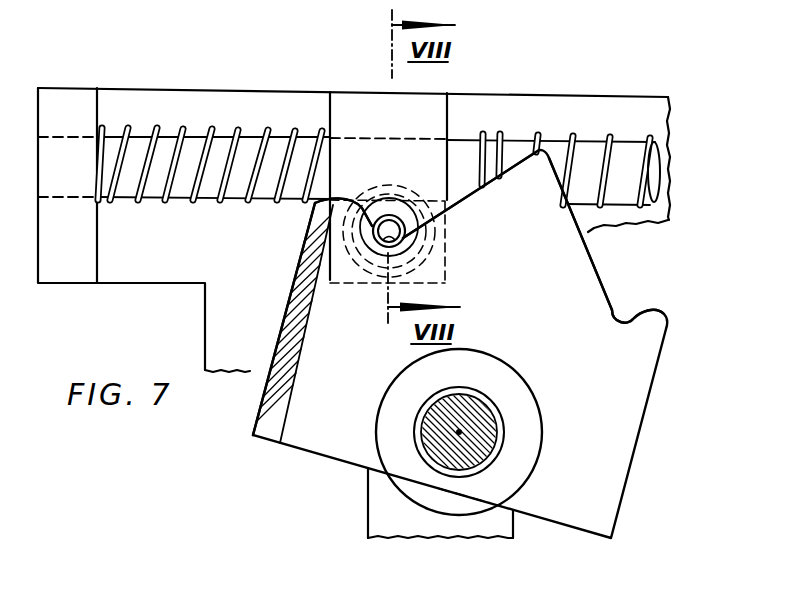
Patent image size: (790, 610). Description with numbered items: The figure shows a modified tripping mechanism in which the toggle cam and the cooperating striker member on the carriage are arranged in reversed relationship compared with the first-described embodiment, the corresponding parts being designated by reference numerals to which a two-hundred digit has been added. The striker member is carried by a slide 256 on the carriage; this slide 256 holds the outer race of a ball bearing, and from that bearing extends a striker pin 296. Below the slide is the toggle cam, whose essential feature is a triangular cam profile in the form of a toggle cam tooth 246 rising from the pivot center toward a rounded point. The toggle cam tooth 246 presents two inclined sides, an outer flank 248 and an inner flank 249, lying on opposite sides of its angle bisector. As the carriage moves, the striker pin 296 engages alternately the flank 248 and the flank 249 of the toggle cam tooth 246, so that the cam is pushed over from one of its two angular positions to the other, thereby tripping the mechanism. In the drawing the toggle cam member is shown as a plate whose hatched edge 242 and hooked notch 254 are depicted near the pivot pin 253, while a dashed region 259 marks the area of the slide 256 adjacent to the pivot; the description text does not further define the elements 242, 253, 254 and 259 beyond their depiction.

The hatched abutment edge of cam arm 242 is at (252, 436).
The toggle cam tooth 246 is at (436, 344).
The outer flank of toggle cam tooth 248 is at (478, 192).
The inner flank of toggle cam tooth 249 is at (595, 272).
The pivot pin 253 is at (393, 248).
The notch hook of cam arm 254 is at (635, 322).
The slide 256 is at (355, 105).
The recess region 259 is at (409, 158).
The striker pin 296 is at (368, 240).